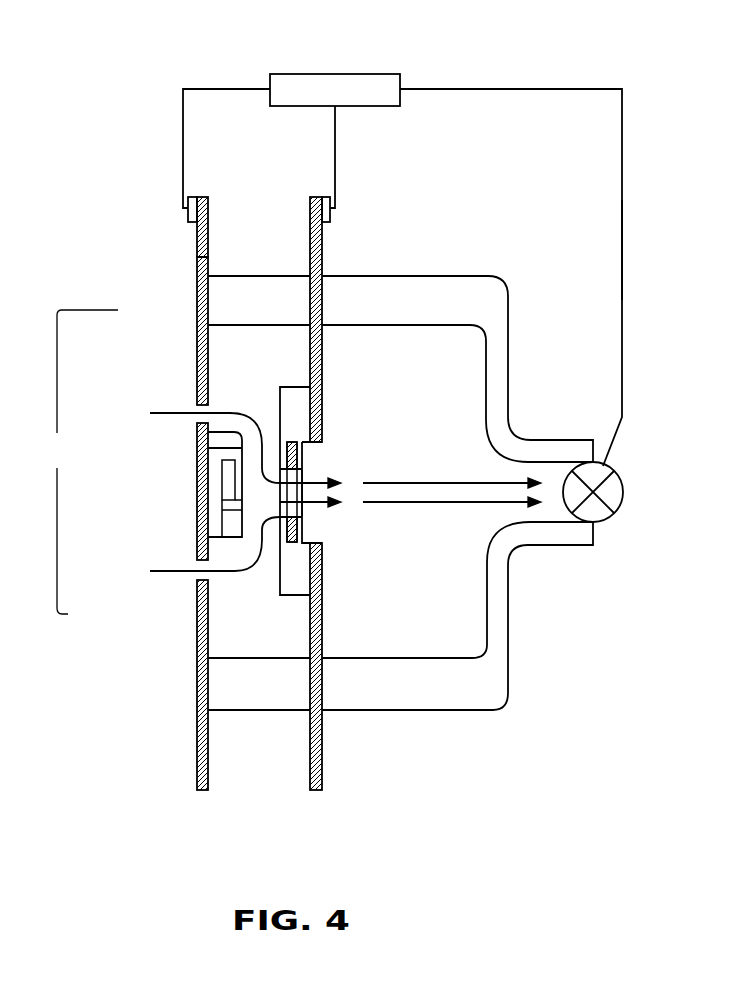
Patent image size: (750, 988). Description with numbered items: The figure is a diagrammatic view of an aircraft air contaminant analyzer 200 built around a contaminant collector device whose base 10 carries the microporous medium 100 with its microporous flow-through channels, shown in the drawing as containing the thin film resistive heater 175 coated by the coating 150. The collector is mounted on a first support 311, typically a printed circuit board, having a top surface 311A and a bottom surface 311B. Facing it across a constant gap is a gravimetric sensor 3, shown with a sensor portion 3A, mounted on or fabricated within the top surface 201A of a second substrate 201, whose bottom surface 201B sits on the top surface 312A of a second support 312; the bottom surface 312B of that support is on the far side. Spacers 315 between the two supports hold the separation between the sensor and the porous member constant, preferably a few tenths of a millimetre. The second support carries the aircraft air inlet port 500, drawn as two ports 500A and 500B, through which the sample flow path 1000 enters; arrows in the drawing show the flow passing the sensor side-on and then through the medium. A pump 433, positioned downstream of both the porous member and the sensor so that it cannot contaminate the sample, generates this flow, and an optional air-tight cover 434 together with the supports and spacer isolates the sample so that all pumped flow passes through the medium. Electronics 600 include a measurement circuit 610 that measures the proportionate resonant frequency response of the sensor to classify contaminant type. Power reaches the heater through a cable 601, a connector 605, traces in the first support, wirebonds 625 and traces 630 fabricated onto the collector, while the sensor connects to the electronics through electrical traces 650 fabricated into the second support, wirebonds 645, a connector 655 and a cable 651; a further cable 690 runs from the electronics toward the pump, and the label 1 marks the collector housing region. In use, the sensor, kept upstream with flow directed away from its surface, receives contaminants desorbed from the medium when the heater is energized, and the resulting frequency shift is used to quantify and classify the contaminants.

The electronics 600 is at (291, 88).
The measurement circuit 610 is at (367, 92).
The electrical connection to detector 690 is at (624, 234).
The cable 651 is at (182, 140).
The cable 601 is at (336, 136).
The connector 655 is at (192, 197).
The connector 605 is at (326, 196).
The electrical traces 650 is at (209, 230).
The second support 312 is at (194, 553).
The top surface of second support 312A is at (208, 745).
The bottom surface of second support 312B is at (197, 757).
The first support 311 is at (332, 505).
The top surface of first support 311A is at (323, 741).
The bottom surface of first support 311B is at (310, 768).
The spacers 315 is at (400, 493).
The air-tight cover 434 is at (485, 688).
The pump 433 is at (597, 508).
The wirebonds 625 is at (296, 387).
The traces 630 is at (290, 610).
The base 10 is at (295, 513).
The analysis system 1 is at (337, 547).
The top surface of second substrate 201A is at (302, 527).
The wirebonds 645 is at (232, 410).
The second substrate 201 is at (222, 527).
The bottom surface of second substrate 201B is at (205, 455).
The gravimetric sensor 3 is at (240, 486).
The sample carrier portion 3A is at (235, 500).
The microporous medium 100 is at (179, 644).
The thin film resistive heater 175 is at (179, 644).
The coating 150 is at (287, 542).
The aircraft air inlet port 500 is at (115, 464).
The air inlet port 500A is at (178, 393).
The air inlet port 500B is at (182, 588).
The sample flow path 1000 is at (142, 396).
The aircraft air contaminant analyzer 200 is at (135, 837).